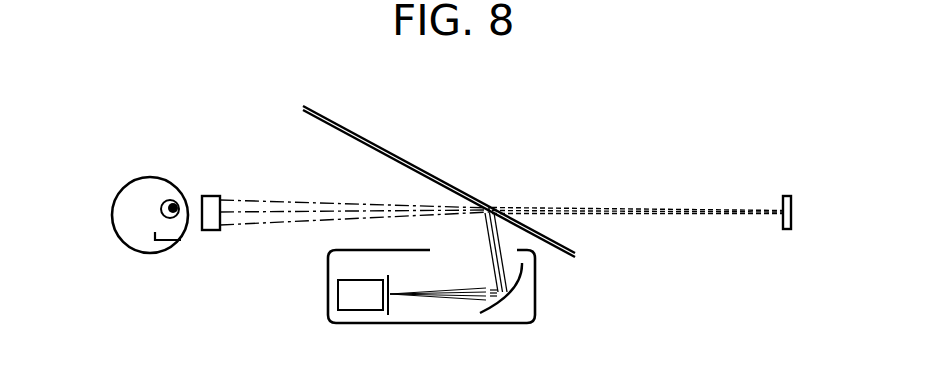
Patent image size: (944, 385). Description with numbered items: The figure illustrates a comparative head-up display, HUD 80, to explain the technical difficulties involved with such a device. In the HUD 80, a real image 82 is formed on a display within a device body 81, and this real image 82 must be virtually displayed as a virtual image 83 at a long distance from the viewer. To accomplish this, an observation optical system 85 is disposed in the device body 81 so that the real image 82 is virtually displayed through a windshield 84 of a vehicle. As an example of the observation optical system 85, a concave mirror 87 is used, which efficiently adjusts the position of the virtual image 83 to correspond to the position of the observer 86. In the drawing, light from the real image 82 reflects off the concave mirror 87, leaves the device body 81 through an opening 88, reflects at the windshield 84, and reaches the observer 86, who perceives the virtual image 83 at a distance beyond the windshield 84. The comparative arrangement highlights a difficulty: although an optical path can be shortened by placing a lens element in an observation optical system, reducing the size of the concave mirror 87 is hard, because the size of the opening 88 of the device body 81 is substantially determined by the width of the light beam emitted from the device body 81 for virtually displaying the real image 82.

The HUD 80 is at (599, 197).
The device body 81 is at (328, 278).
The real image 82 is at (390, 304).
The virtual image 83 is at (792, 212).
The windshield 84 is at (386, 151).
The observation optical system 85 is at (512, 312).
The observer 86 is at (112, 218).
The concave mirror 87 is at (518, 288).
The opening 88 is at (468, 253).